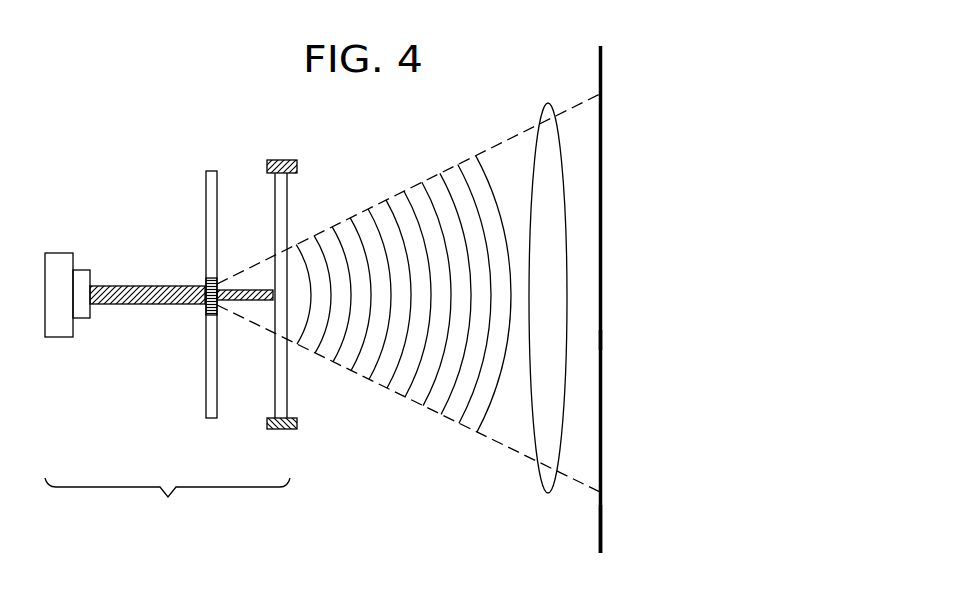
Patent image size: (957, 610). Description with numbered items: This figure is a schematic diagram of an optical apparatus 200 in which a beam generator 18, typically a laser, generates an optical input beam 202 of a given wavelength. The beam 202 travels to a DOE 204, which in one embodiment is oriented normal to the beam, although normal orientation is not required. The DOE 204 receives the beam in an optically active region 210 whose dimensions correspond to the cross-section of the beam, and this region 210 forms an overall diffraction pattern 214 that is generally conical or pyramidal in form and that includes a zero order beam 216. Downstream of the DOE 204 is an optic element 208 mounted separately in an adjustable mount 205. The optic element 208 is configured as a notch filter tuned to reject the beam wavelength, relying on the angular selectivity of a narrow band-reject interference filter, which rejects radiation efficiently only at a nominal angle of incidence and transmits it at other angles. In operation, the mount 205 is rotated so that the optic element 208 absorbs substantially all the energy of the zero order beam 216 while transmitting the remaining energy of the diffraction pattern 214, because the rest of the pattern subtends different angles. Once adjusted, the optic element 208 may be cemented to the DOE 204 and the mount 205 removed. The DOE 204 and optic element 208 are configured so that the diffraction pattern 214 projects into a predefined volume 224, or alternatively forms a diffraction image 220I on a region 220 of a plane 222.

The beam generator 18 is at (60, 337).
The optical apparatus 200 is at (167, 505).
The beam 202 is at (150, 305).
The DOE 204 is at (212, 419).
The adjustable mount 205 is at (292, 160).
The optic element 208 is at (288, 225).
The optically active region 210 is at (210, 316).
The diffraction pattern 214 is at (486, 438).
The zero order beam 216 is at (250, 301).
The region 220 is at (602, 400).
The diffraction image 220I is at (602, 342).
The plane 222 is at (602, 517).
The predefined volume 224 is at (540, 106).